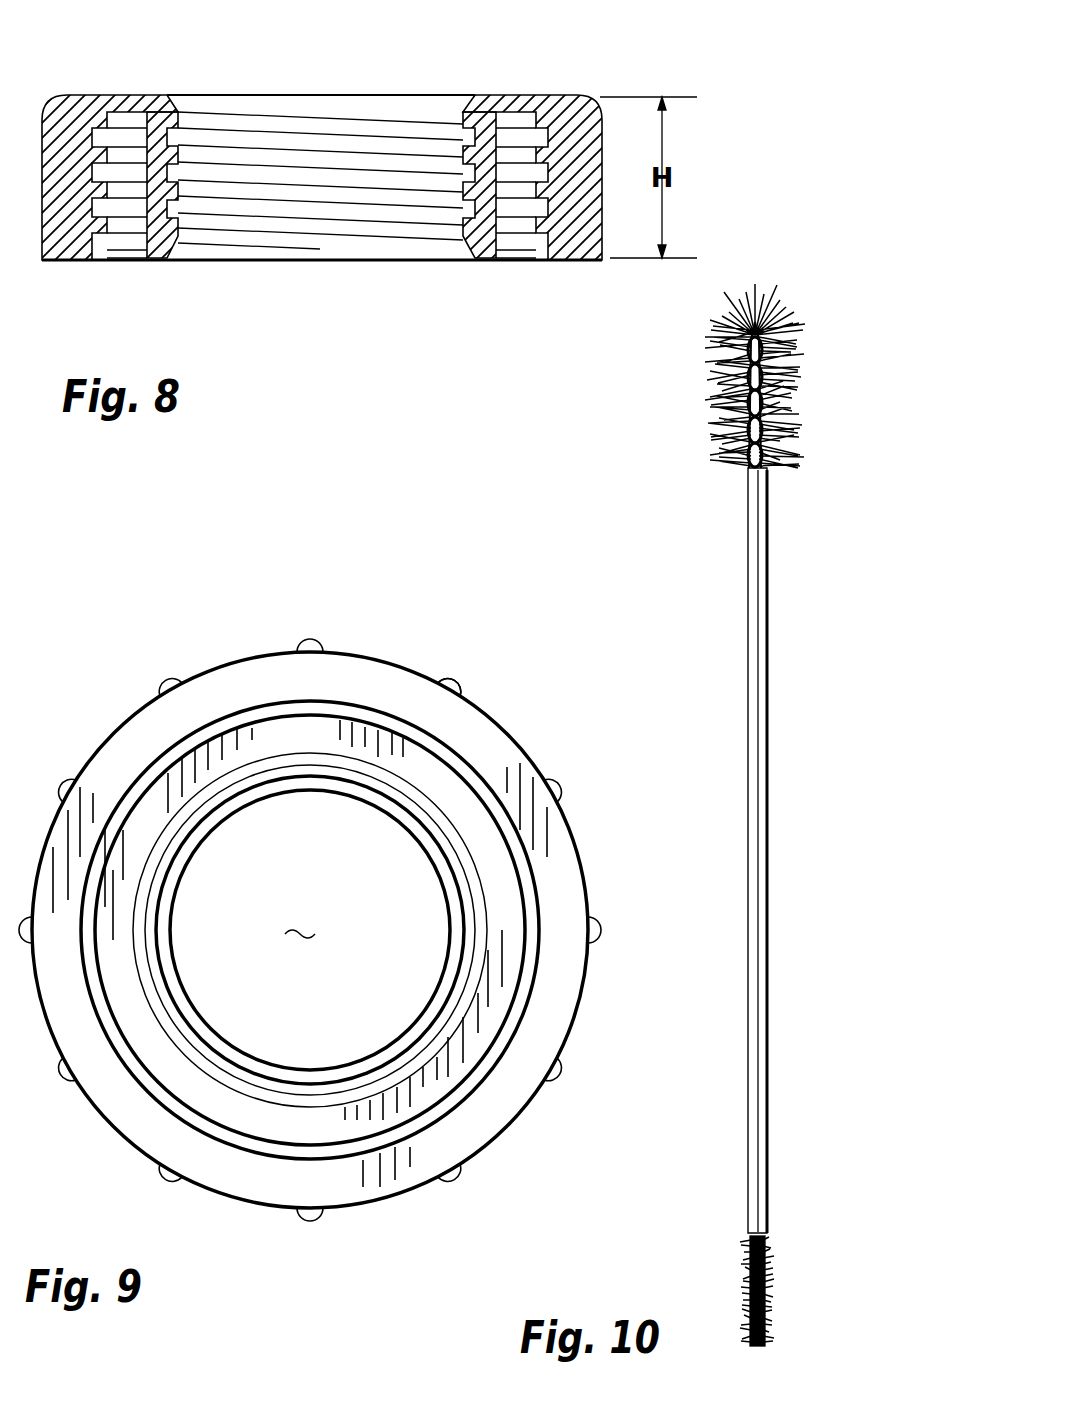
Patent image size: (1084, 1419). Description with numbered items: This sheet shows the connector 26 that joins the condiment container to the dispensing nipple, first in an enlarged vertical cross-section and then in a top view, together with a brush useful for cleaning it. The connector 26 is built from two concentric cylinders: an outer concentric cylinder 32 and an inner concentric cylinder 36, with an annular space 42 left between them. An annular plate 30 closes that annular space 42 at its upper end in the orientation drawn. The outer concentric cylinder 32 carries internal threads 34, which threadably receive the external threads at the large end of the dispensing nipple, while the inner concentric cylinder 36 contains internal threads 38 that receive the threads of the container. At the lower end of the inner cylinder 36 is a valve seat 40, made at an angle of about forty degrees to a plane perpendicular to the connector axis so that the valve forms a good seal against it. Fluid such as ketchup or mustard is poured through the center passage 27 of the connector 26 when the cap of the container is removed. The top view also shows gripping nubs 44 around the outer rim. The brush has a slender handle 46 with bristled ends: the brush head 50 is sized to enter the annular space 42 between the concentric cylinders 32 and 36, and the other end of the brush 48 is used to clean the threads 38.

In FIG. 8, the connector 26 is at (345, 170).
In FIG. 9, the connector 26 is at (238, 1212).
In FIG. 8, the center passage 27 is at (303, 167).
In FIG. 9, the center passage 27 is at (300, 916).
In FIG. 8, the annular plate 30 is at (138, 97).
In FIG. 9, the annular plate 30 is at (383, 688).
In FIG. 8, the outer concentric cylinder 32 is at (63, 237).
In FIG. 8, the internal threads 34 is at (100, 227).
In FIG. 9, the internal threads 34 is at (167, 757).
In FIG. 8, the inner concentric cylinder 36 is at (158, 223).
In FIG. 9, the inner concentric cylinder 36 is at (402, 787).
In FIG. 8, the internal threads 38 is at (470, 198).
In FIG. 9, the internal threads 38 is at (427, 845).
In FIG. 8, the valve seat 40 is at (480, 238).
In FIG. 9, the annular space 42 is at (287, 735).
In FIG. 9, the gripping nub 44 is at (462, 682).
In FIG. 10, the arrows 46 is at (765, 628).
In FIG. 10, the brush 48 is at (767, 337).
In FIG. 10, the brush head 50 is at (768, 1300).